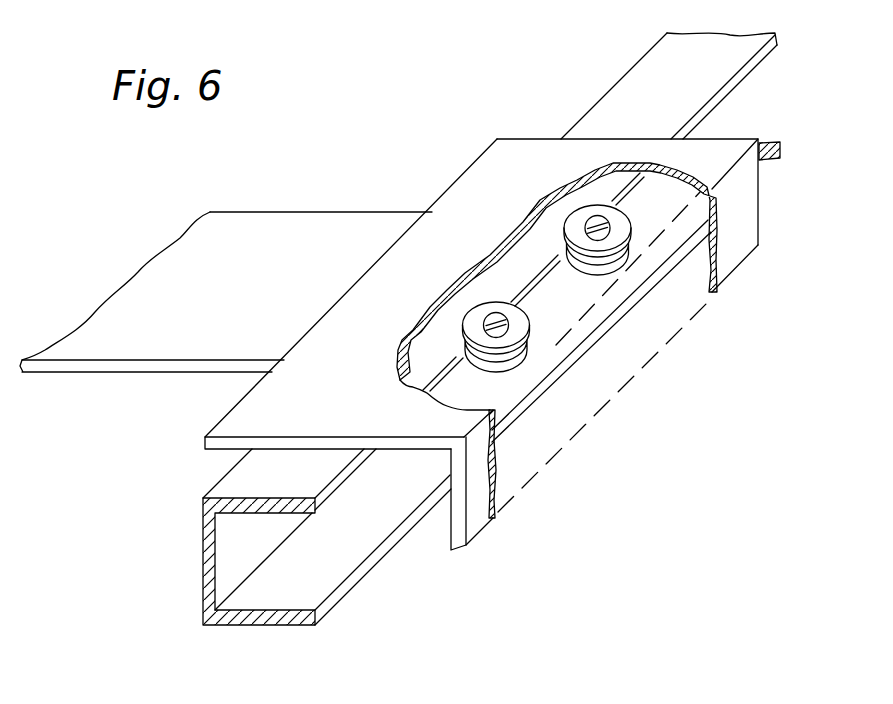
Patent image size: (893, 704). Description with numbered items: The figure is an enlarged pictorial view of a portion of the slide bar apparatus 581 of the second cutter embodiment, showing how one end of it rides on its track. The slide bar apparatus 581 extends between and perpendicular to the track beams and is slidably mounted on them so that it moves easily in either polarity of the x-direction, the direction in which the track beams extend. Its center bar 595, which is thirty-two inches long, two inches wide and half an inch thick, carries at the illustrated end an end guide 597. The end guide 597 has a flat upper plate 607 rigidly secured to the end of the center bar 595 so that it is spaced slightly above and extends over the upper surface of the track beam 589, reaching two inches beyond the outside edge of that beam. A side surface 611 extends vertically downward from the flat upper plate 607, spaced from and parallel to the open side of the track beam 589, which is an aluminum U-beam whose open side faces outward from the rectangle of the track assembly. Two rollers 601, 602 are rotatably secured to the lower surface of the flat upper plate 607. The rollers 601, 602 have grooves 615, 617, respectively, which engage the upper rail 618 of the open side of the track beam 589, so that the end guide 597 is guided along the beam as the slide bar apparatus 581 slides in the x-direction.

The slide bar apparatus 581 is at (241, 204).
The center bar 595 is at (318, 211).
The end guide 597 is at (521, 137).
The flat upper plate 607 is at (232, 411).
The side surface 611 is at (482, 537).
The upper rail 618 is at (348, 471).
The track beam 589 is at (202, 561).
The groove 615 is at (632, 272).
The groove 617 is at (539, 365).
The roller 601 is at (604, 280).
The roller 602 is at (509, 376).